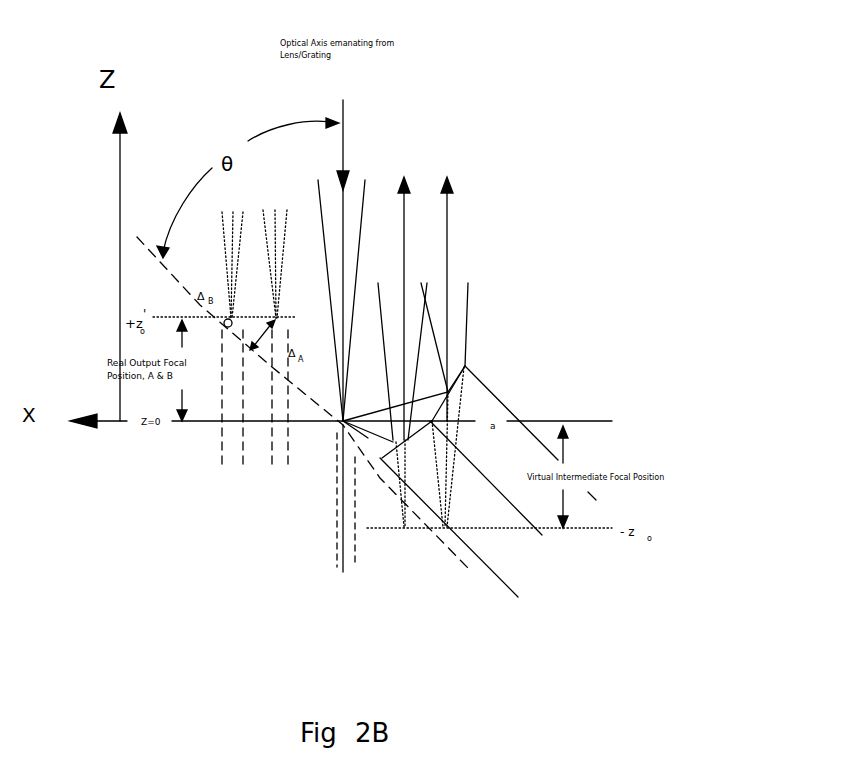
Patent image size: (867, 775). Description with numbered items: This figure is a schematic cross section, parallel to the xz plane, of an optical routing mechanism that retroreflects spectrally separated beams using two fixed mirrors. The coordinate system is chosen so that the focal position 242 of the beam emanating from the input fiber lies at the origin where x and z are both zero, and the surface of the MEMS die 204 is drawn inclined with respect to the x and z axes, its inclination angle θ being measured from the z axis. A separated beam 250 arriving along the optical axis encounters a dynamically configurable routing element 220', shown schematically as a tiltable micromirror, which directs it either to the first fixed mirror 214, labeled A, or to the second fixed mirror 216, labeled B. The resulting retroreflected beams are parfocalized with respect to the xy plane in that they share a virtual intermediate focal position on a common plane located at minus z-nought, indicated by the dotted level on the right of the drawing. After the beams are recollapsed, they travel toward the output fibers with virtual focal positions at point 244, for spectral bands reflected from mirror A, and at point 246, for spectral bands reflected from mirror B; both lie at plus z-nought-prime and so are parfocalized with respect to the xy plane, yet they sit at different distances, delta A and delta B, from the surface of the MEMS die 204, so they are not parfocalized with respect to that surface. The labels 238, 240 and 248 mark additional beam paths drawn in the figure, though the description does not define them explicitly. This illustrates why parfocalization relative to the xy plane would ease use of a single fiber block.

The MEMS die 204 is at (463, 568).
The first fixed mirror 214 is at (525, 543).
The second fixed mirror 216 is at (503, 403).
The dynamically configurable routing element 220' is at (380, 404).
The optical axis below lens/grating 238 is at (357, 565).
The output beam B 240 is at (267, 400).
The focal position 242 is at (339, 432).
The virtual focal position point 244 is at (287, 318).
The virtual focal position point 246 is at (241, 318).
The output beam A 248 is at (222, 381).
The separated beam 250 is at (369, 188).